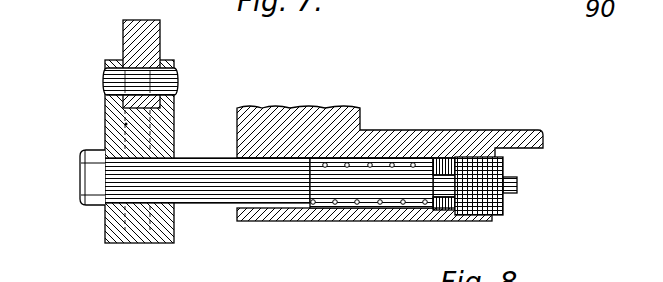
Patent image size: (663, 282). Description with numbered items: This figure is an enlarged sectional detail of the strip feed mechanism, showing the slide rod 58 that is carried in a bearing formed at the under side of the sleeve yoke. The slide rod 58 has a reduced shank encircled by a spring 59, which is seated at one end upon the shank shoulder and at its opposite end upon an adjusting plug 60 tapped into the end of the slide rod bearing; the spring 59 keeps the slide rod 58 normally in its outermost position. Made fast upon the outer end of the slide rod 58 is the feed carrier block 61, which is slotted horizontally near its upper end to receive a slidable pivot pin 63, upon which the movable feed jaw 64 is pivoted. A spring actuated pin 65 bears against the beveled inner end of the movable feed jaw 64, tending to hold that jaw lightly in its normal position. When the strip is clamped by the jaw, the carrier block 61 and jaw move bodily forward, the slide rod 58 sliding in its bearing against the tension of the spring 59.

The slide rod 58 is at (118, 180).
The spring 59 is at (335, 200).
The adjusting plug 60 is at (505, 207).
The block 61 is at (125, 244).
The slidable pivot pin 63 is at (178, 80).
The movable feed jaw 64 is at (160, 40).
The spring actuated pin 65 is at (124, 125).